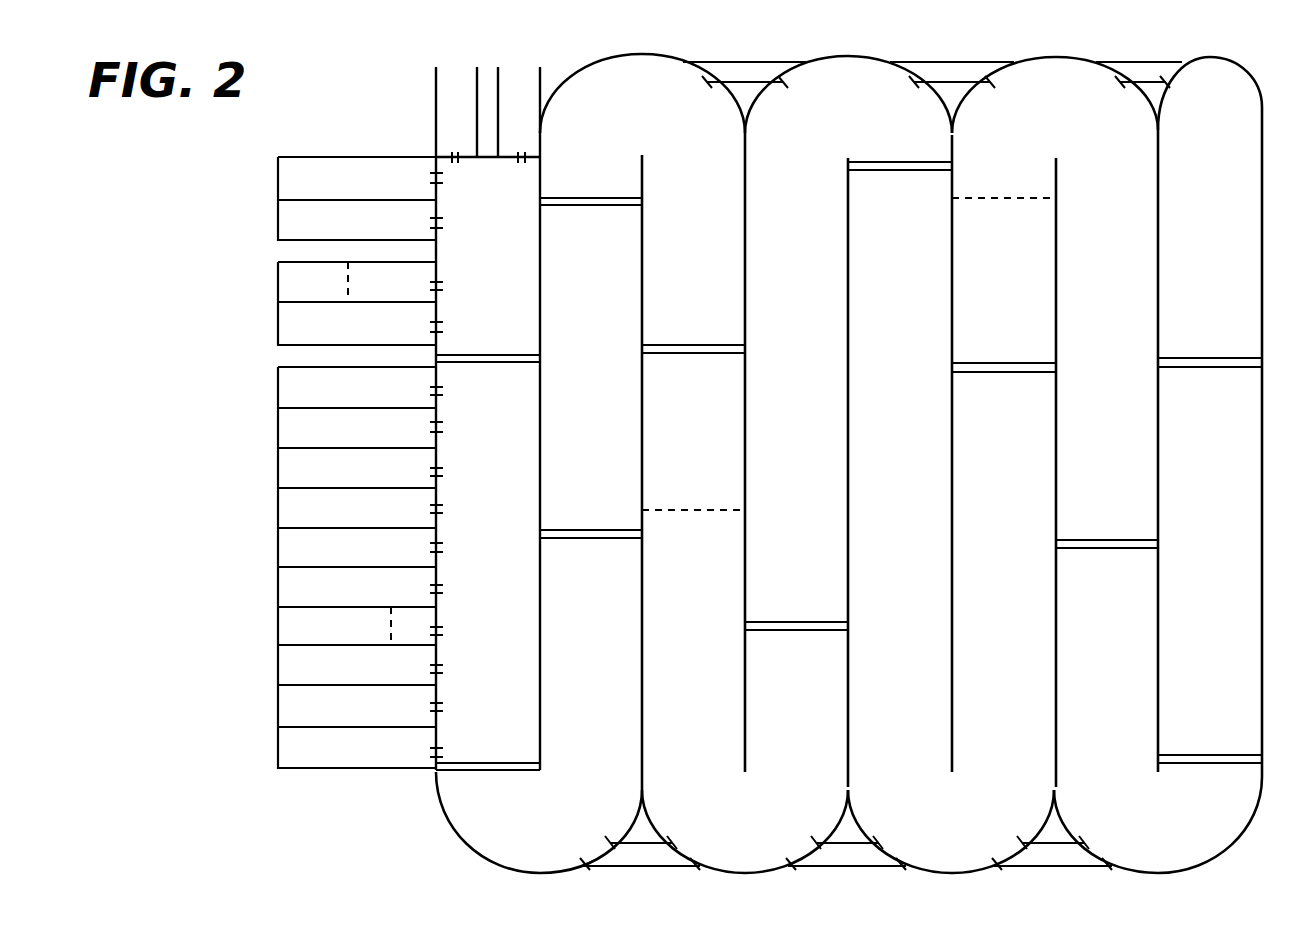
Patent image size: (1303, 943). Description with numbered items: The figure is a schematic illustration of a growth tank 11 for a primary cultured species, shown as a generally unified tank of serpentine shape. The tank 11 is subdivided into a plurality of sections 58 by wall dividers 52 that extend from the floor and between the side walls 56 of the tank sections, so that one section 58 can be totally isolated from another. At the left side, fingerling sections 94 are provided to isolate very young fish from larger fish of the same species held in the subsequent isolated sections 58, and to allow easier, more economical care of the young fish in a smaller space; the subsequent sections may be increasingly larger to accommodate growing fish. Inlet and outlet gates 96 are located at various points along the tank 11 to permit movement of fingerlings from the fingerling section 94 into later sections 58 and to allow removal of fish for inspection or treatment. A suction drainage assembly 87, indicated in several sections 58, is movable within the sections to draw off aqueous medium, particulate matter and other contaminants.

The growth tank 11 is at (414, 62).
The wall divider 52 is at (498, 364).
The side wall 56 is at (541, 428).
The section 58 is at (505, 303).
The suction drainage assembly 87 is at (348, 283).
The fingerling section 94 is at (295, 223).
The inlet and outlet gate 96 is at (790, 62).